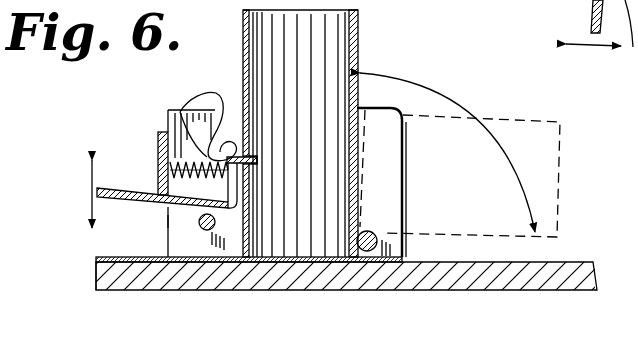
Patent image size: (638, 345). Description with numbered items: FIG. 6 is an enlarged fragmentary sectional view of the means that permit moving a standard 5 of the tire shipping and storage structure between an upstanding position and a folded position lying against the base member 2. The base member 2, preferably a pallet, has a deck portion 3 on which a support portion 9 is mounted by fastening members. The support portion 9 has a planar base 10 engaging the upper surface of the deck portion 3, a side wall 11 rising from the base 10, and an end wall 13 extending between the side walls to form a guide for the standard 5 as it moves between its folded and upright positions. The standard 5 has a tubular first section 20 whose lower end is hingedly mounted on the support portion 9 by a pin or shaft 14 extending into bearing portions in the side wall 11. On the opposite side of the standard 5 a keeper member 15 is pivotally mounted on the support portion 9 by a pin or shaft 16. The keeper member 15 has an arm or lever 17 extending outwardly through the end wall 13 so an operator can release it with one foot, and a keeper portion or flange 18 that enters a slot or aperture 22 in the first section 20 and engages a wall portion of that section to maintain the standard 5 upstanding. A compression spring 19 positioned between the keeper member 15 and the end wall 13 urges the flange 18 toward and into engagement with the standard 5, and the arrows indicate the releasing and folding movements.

The base member 2 is at (93, 272).
The deck portion 3 is at (563, 272).
The standard 5 is at (272, 133).
The support portion 9 is at (164, 222).
The planar base 10 is at (133, 257).
The side wall 11 is at (171, 127).
The end wall 13 is at (158, 155).
The pin or shaft 14 is at (402, 243).
The keeper member 15 is at (234, 155).
The pin or shaft 16 is at (207, 229).
The arm or lever 17 is at (142, 189).
The keeper portion or flange 18 is at (221, 100).
The compression spring 19 is at (180, 116).
The tubular first section 20 is at (273, 32).
The slot or aperture 22 is at (256, 157).